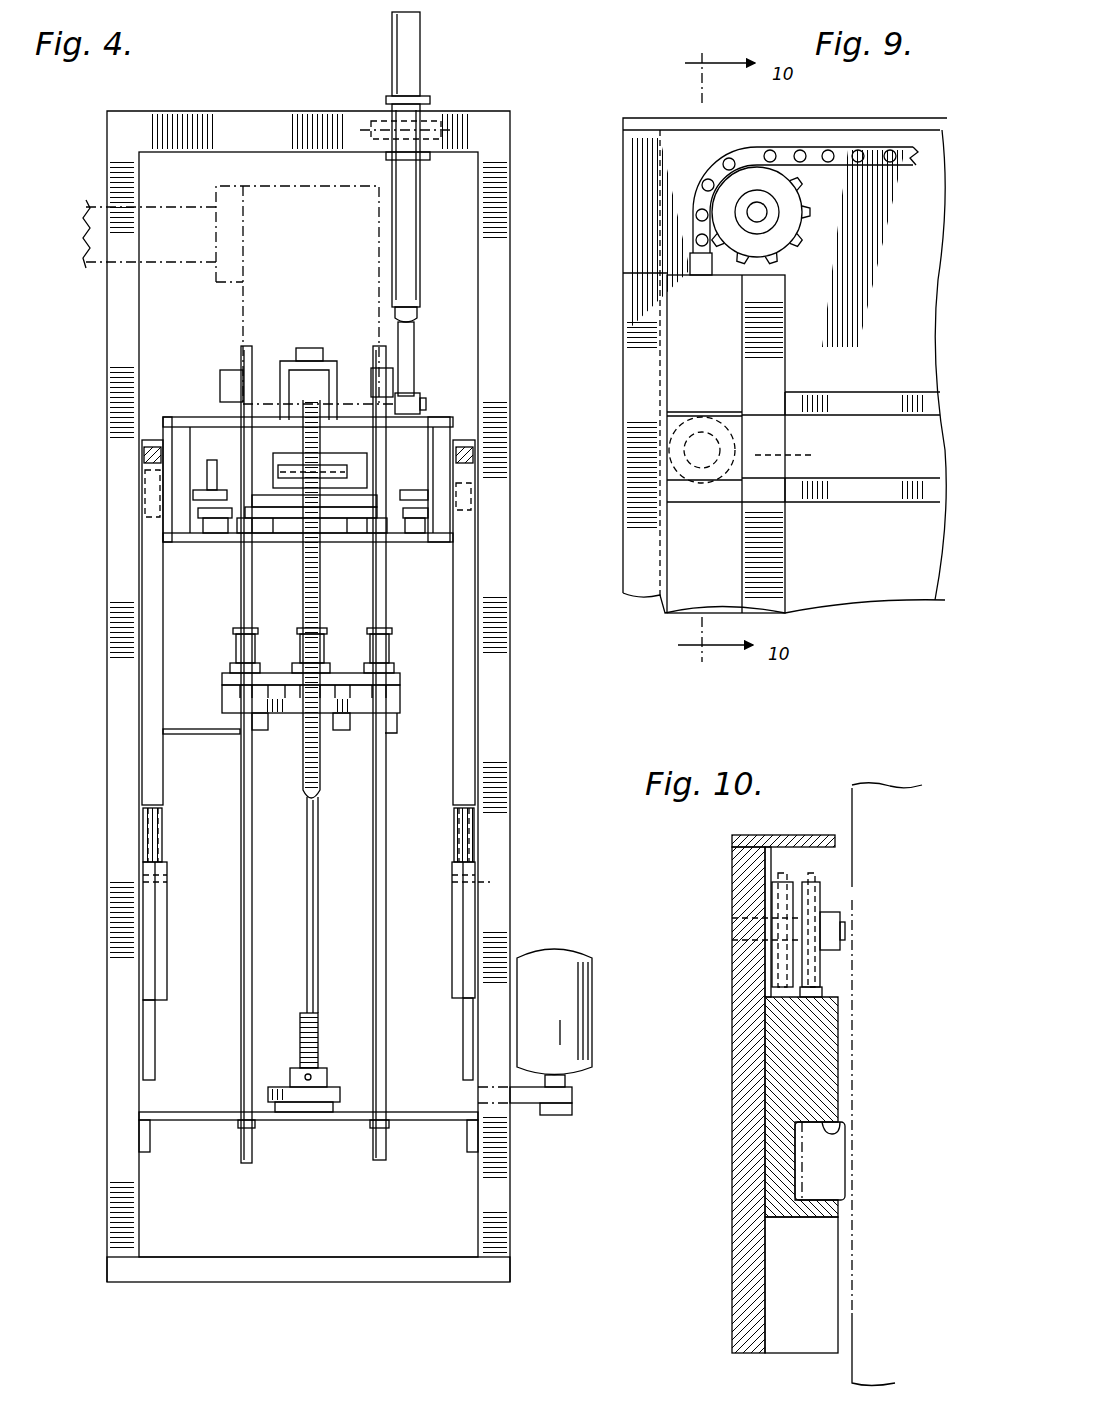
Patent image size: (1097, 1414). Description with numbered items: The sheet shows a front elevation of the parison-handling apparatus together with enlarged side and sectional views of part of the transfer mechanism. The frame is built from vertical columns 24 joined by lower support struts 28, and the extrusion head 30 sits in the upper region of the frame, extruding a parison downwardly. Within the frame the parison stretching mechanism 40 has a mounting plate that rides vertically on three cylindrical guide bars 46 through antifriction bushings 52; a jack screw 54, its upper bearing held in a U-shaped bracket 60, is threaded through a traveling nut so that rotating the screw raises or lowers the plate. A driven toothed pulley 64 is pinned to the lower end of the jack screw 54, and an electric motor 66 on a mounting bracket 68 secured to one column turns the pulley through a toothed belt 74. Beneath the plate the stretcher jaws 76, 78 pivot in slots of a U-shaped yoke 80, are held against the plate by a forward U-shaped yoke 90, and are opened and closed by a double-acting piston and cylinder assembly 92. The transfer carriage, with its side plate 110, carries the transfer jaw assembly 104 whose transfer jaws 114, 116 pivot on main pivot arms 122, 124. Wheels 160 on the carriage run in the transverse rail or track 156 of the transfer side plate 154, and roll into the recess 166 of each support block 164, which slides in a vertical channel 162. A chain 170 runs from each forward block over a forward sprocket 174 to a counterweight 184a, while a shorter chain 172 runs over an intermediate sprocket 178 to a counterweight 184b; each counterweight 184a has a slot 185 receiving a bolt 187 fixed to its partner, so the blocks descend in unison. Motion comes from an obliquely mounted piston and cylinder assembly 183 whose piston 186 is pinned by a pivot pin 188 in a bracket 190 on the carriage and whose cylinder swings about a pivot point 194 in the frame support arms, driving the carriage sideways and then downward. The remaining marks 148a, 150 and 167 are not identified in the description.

In FIG. 4, the columns 24 is at (510, 705).
In FIG. 4, the lower support struts 28 is at (345, 1265).
In FIG. 4, the extrusion head 30 is at (240, 292).
In FIG. 4, the parison stretching mechanism 40 is at (225, 752).
In FIG. 4, the guide bars 46 is at (241, 594).
In FIG. 4, the antifriction bushings 52 is at (233, 645).
In FIG. 4, the jack screw 54 is at (320, 628).
In FIG. 4, the U-shaped bracket 60 is at (280, 378).
In FIG. 4, the driven toothed pulley 64 is at (290, 1080).
In FIG. 4, the electric motor 66 is at (560, 950).
In FIG. 4, the mounting bracket 68 is at (316, 348).
In FIG. 4, the toothed belt 74 is at (528, 1100).
In FIG. 4, the stretcher jaw 76 is at (221, 706).
In FIG. 4, the stretcher jaw 78 is at (396, 715).
In FIG. 4, the U-shaped yoke 80 is at (400, 688).
In FIG. 4, the forward U-shaped yoke 90 is at (348, 742).
In FIG. 4, the piston and cylinder assembly 92 is at (186, 712).
In FIG. 4, the transfer jaw assembly 104 is at (210, 547).
In FIG. 10, the side plate 110 is at (852, 1360).
In FIG. 4, the transfer jaw 114 is at (315, 512).
In FIG. 4, the transfer jaw 116 is at (285, 520).
In FIG. 4, the main pivot arm 122 is at (405, 520).
In FIG. 4, the main pivot arm 124 is at (200, 514).
In FIG. 4, the rod 148a is at (190, 956).
In FIG. 4, the block 150 is at (287, 465).
In FIG. 4, the transfer side plate 154 is at (143, 490).
In FIG. 9, the transfer side plate 154 is at (870, 605).
In FIG. 9, the transverse rail or track 156 is at (862, 495).
In FIG. 9, the wheels 160 is at (841, 446).
In FIG. 10, the wheels 160 is at (845, 1190).
In FIG. 4, the vertical channels 162 is at (150, 770).
In FIG. 10, the vertical channels 162 is at (740, 1275).
In FIG. 9, the support block 164 is at (676, 352).
In FIG. 10, the support block 164 is at (820, 1040).
In FIG. 9, the recess 166 is at (668, 420).
In FIG. 10, the recess 166 is at (830, 1128).
In FIG. 9, the roller 167 is at (668, 455).
In FIG. 4, the chain 170 is at (143, 850).
In FIG. 9, the chain 170 is at (880, 170).
In FIG. 10, the chain 170 is at (812, 875).
In FIG. 4, the shorter chain 172 is at (162, 830).
In FIG. 10, the shorter chain 172 is at (775, 878).
In FIG. 9, the forward sprocket 174 is at (790, 225).
In FIG. 10, the forward sprocket 174 is at (832, 912).
In FIG. 10, the intermediate sprocket 178 is at (765, 905).
In FIG. 4, the piston and cylinder assembly 183 is at (420, 28).
In FIG. 4, the counterweight 184a is at (452, 950).
In FIG. 4, the counterweight 184b is at (155, 1058).
In FIG. 4, the slot 185 is at (490, 880).
In FIG. 4, the piston 186 is at (412, 340).
In FIG. 4, the bolt 187 is at (167, 880).
In FIG. 4, the pivot pin 188 is at (426, 405).
In FIG. 4, the bracket 190 is at (410, 393).
In FIG. 4, the pivot point 194 is at (371, 128).